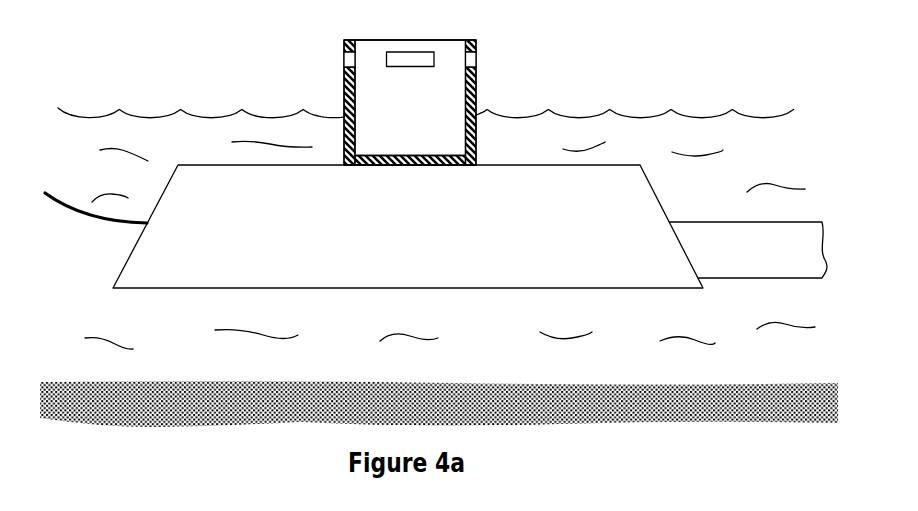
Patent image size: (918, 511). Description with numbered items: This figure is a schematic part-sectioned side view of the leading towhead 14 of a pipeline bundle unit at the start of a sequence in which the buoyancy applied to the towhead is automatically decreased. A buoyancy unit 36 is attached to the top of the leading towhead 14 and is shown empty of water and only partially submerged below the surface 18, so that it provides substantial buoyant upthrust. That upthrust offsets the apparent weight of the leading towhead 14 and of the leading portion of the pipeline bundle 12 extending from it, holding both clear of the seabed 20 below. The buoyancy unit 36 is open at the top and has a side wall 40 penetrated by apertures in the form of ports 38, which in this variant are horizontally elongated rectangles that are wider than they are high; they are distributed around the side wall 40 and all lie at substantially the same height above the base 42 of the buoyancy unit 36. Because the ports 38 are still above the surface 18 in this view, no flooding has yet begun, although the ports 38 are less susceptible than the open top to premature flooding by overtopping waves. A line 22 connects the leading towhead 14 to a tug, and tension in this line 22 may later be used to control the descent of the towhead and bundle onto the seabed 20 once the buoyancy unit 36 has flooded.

The pipeline bundle 12 is at (808, 243).
The leading towhead 14 is at (460, 277).
The surface 18 is at (156, 117).
The seabed 20 is at (192, 385).
The line 22 is at (58, 193).
The buoyancy unit 36 is at (490, 53).
The ports 38 is at (344, 60).
The side wall 40 is at (474, 97).
The base 42 is at (368, 155).